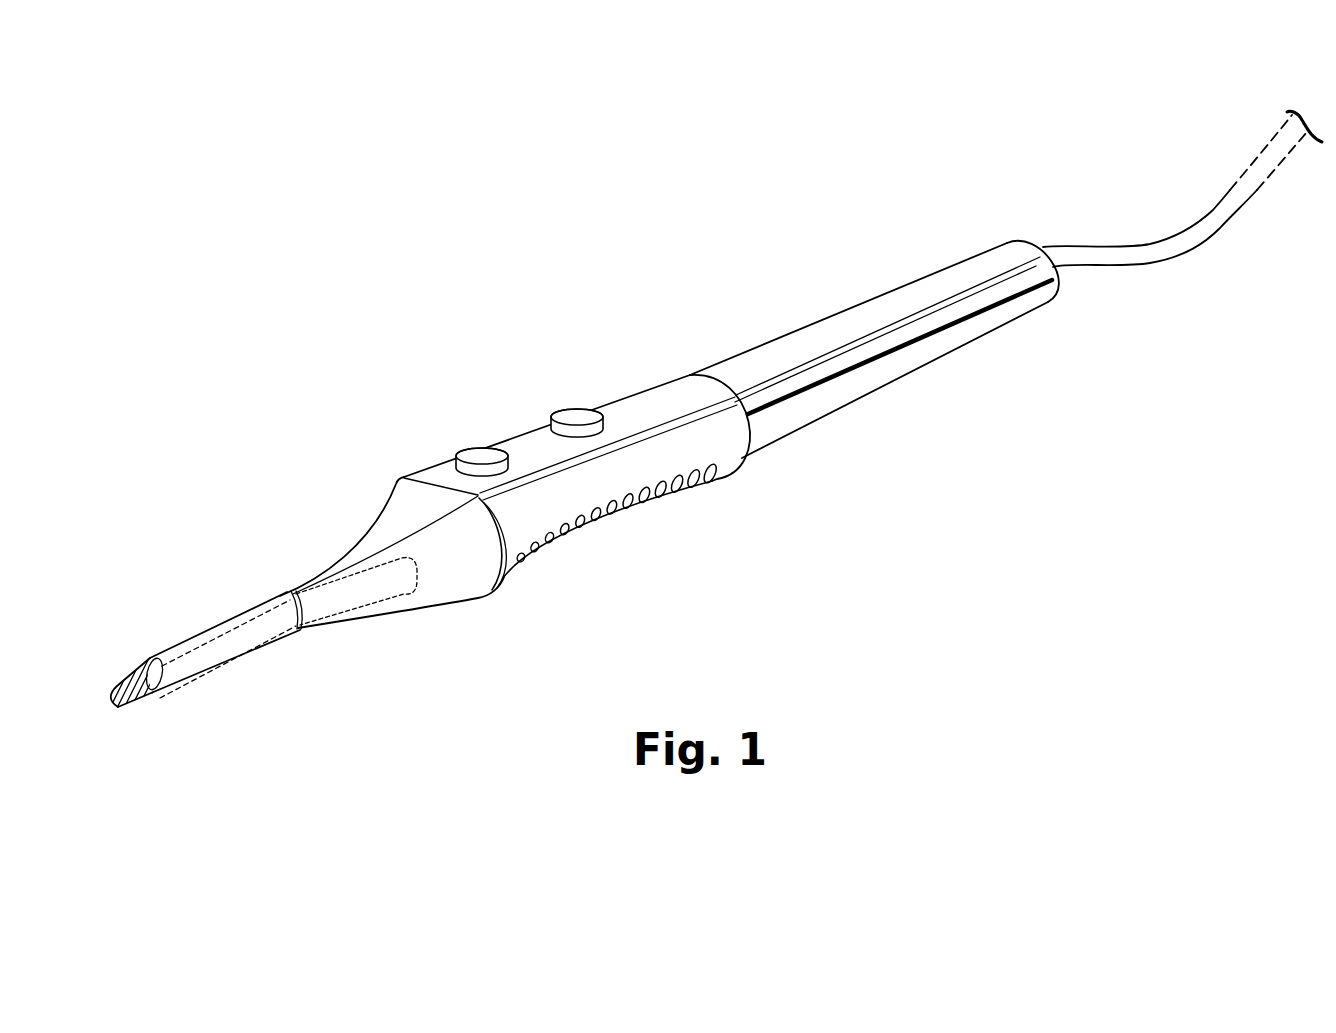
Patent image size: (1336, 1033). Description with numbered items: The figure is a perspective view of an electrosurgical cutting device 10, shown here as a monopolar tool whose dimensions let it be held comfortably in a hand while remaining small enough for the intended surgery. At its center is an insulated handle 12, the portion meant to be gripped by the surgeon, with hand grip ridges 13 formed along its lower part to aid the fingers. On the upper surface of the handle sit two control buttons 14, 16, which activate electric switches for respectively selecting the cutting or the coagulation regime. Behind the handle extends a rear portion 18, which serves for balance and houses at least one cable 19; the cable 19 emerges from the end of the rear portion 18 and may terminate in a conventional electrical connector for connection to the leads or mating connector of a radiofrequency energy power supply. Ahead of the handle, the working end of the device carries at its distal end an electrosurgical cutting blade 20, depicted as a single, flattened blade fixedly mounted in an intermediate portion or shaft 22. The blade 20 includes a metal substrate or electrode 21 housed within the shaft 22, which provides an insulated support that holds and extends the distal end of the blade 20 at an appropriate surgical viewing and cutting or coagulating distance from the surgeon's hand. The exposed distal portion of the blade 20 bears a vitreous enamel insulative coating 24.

The electrosurgical cutting device 10 is at (406, 335).
The insulated handle 12 is at (676, 387).
The hand grip ridges 13 is at (662, 502).
The control button 14 is at (483, 457).
The control button 16 is at (573, 417).
The rear portion 18 is at (825, 400).
The cable 19 is at (1157, 250).
The electrosurgical cutting blade 20 is at (104, 668).
The metal substrate or electrode 21 is at (189, 665).
The intermediate portion or shaft 22 is at (247, 655).
The vitreous enamel insulative coating 24 is at (135, 698).